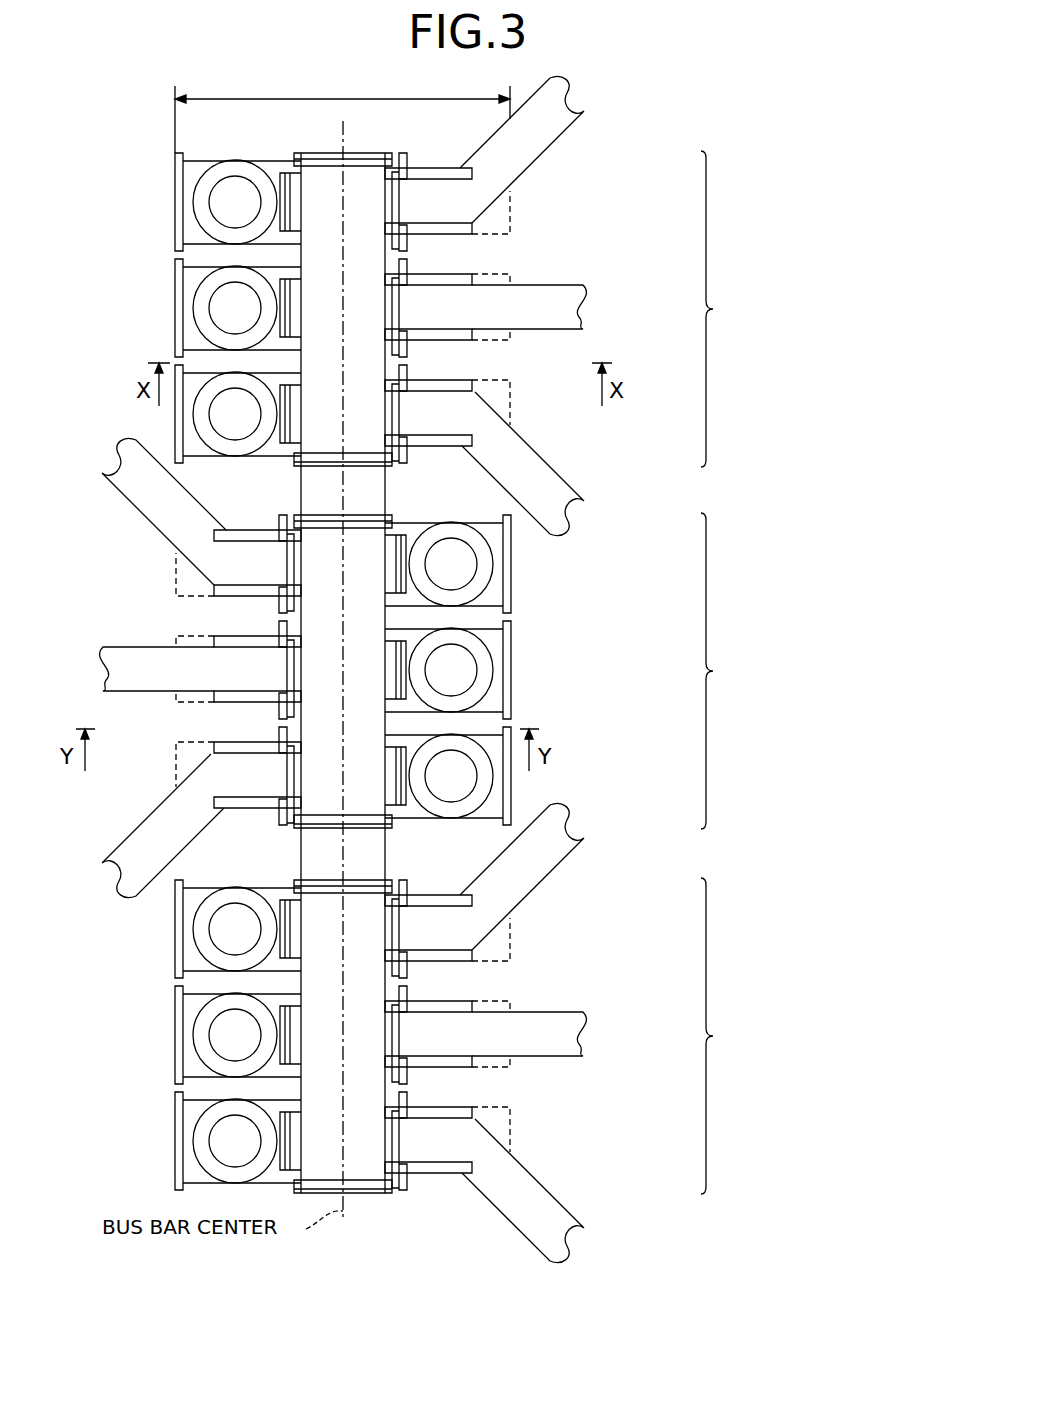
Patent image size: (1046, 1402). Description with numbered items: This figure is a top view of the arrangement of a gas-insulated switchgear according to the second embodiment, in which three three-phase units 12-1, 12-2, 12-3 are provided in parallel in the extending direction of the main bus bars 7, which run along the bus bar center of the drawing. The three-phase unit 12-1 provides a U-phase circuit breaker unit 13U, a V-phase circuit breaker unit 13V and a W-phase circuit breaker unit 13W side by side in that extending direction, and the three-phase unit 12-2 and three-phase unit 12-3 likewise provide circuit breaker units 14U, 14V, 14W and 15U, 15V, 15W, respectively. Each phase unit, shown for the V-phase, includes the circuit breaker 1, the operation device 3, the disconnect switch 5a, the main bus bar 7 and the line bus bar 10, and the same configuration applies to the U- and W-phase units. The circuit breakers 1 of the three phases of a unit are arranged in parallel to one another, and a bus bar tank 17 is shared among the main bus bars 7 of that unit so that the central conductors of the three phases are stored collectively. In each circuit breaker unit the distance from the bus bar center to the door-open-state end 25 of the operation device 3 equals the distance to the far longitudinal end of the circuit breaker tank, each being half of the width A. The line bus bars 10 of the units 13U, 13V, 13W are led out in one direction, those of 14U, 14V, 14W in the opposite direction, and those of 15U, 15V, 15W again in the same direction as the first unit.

The circuit breaker 1 is at (193, 278).
The disconnect switch 5a is at (200, 305).
The operation device 3 is at (443, 281).
The main bus bar 7 is at (362, 177).
The bus bar tank 17 is at (362, 437).
The line bus bar 10 is at (563, 297).
The door-open-state end 25 is at (510, 197).
The U-phase circuit breaker unit 13U is at (604, 198).
The V-phase circuit breaker unit 13V is at (604, 304).
The W-phase circuit breaker unit 13W is at (604, 429).
The U-phase circuit breaker unit 14U is at (604, 560).
The V-phase circuit breaker unit 14V is at (604, 666).
The W-phase circuit breaker unit 14W is at (604, 772).
The U-phase circuit breaker unit 15U is at (604, 925).
The V-phase circuit breaker unit 15V is at (604, 1031).
The W-phase circuit breaker unit 15W is at (604, 1135).
The three-phase unit 12-1 is at (772, 309).
The three-phase unit 12-2 is at (772, 671).
The three-phase unit 12-3 is at (772, 1036).
The distance A is at (342, 113).